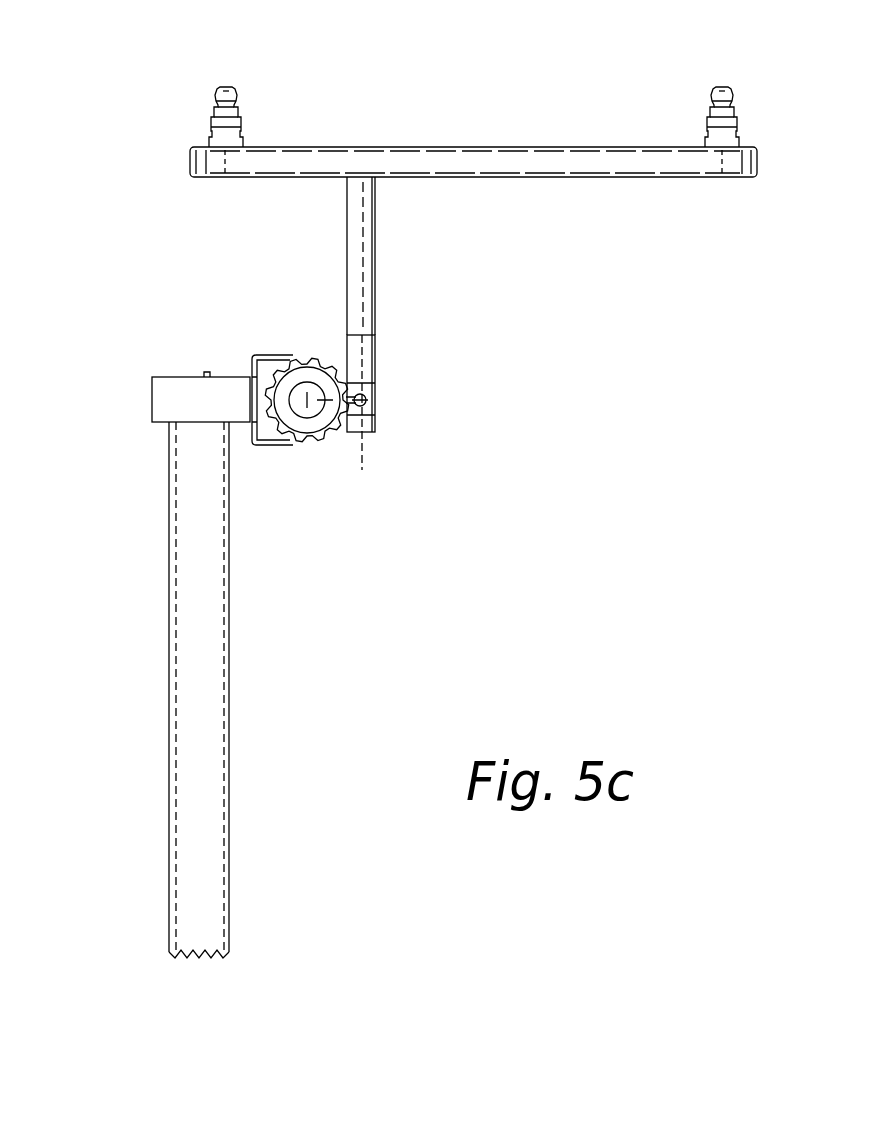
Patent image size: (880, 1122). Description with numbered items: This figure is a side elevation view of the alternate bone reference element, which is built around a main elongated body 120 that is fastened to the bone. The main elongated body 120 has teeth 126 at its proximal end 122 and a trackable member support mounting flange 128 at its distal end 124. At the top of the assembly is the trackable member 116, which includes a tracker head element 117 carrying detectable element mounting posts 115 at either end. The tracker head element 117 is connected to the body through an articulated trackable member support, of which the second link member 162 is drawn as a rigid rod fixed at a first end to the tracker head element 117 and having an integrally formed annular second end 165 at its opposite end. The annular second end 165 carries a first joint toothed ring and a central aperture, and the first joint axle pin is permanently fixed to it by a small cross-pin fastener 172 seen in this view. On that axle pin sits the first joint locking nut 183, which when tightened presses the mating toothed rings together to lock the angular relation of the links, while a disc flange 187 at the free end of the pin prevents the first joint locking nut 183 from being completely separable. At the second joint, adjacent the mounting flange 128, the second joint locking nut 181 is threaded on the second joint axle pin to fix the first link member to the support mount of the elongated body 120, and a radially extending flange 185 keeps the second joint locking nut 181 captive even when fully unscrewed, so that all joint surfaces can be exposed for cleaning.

The detectable element mounting posts 115 is at (222, 123).
The trackable member 116 is at (474, 143).
The tracker head element 117 is at (522, 165).
The main elongated body 120 is at (250, 733).
The proximal end 122 is at (160, 937).
The distal end 124 is at (183, 733).
The teeth 126 is at (202, 957).
The trackable member support mounting flange 128 is at (169, 350).
The second link member 162 is at (368, 230).
The annular second end 165 is at (414, 416).
The cross-pin fastener 172 is at (372, 418).
The second joint locking nut 181 is at (328, 450).
The first joint locking nut 183 is at (280, 360).
The radially extending flange 185 is at (305, 412).
The disc flange 187 is at (207, 372).